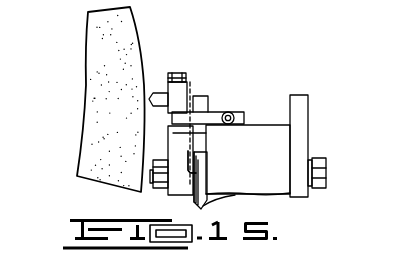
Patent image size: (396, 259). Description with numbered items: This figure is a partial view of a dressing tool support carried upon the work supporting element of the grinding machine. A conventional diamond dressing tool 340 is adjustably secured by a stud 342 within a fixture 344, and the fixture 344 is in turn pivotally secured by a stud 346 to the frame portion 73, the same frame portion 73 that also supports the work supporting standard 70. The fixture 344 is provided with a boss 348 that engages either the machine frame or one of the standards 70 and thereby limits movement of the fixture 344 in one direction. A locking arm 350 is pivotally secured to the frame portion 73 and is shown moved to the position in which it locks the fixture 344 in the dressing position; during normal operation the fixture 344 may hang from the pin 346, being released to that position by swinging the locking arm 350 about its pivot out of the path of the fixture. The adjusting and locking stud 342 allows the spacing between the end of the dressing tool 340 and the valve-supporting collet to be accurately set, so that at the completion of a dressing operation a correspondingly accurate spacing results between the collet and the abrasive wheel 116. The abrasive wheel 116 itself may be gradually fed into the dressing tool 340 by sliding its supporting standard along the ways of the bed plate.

The abrasive wheel 116 is at (135, 38).
The diamond dressing tool 340 is at (163, 82).
The stud 342 is at (184, 78).
The fixture 344 is at (208, 94).
The work supporting standard 70 is at (213, 107).
The locking arm 350 is at (216, 123).
The frame portion 73 is at (248, 160).
The boss 348 is at (198, 152).
The stud 346 is at (153, 192).